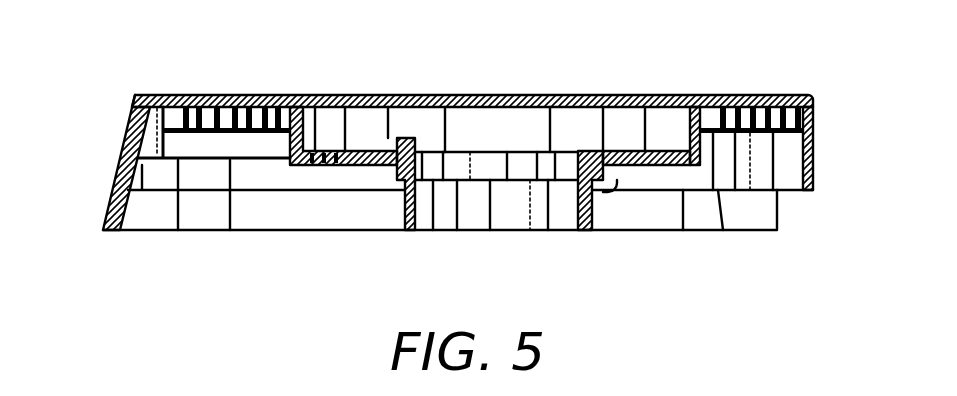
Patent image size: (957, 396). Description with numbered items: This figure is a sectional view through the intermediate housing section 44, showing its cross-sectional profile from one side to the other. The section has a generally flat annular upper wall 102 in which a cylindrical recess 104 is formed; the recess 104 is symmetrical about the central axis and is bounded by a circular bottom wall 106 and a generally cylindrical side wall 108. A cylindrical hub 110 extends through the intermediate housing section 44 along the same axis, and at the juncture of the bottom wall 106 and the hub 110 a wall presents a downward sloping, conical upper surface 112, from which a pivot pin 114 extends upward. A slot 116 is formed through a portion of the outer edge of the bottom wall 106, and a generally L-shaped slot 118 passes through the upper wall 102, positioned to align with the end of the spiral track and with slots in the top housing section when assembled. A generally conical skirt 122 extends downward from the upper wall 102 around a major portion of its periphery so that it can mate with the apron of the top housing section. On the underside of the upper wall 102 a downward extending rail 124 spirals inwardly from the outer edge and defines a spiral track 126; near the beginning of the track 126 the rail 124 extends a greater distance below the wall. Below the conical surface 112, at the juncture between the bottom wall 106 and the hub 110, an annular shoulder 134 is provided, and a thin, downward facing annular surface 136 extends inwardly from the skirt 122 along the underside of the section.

The intermediate housing section 44 is at (148, 86).
The upper wall 102 is at (750, 96).
The cylindrical recess 104 is at (378, 99).
The bottom wall 106 is at (620, 150).
The side wall 108 is at (676, 150).
The hub 110 is at (421, 225).
The conical upper surface 112 is at (567, 150).
The pivot pin 114 is at (419, 138).
The slot 116 is at (331, 150).
The L-shaped slot 118 is at (250, 96).
The skirt 122 is at (115, 185).
The rail 124 is at (203, 132).
The spiral track 126 is at (212, 132).
The annular shoulder 134 is at (592, 195).
The annular surface 136 is at (130, 190).